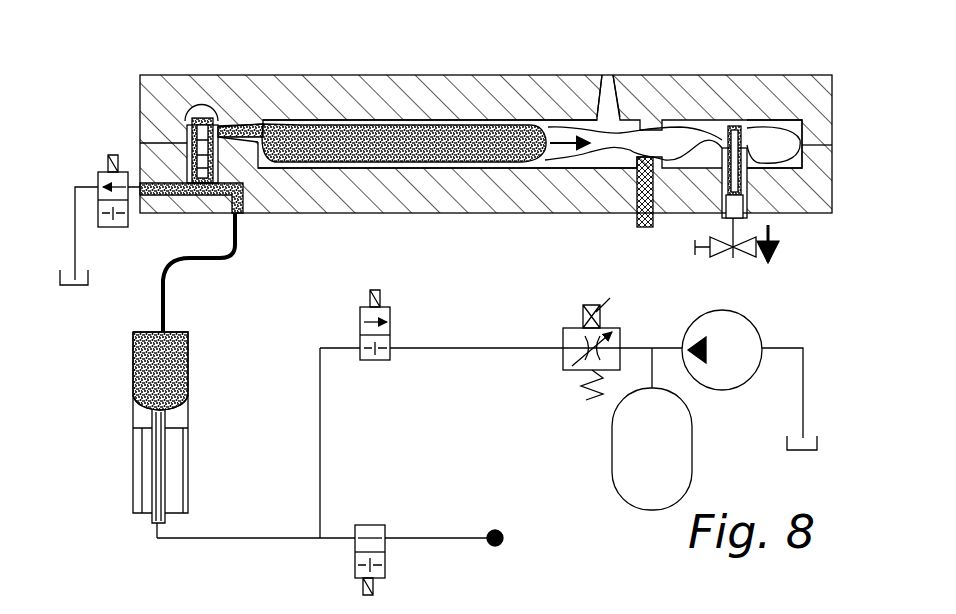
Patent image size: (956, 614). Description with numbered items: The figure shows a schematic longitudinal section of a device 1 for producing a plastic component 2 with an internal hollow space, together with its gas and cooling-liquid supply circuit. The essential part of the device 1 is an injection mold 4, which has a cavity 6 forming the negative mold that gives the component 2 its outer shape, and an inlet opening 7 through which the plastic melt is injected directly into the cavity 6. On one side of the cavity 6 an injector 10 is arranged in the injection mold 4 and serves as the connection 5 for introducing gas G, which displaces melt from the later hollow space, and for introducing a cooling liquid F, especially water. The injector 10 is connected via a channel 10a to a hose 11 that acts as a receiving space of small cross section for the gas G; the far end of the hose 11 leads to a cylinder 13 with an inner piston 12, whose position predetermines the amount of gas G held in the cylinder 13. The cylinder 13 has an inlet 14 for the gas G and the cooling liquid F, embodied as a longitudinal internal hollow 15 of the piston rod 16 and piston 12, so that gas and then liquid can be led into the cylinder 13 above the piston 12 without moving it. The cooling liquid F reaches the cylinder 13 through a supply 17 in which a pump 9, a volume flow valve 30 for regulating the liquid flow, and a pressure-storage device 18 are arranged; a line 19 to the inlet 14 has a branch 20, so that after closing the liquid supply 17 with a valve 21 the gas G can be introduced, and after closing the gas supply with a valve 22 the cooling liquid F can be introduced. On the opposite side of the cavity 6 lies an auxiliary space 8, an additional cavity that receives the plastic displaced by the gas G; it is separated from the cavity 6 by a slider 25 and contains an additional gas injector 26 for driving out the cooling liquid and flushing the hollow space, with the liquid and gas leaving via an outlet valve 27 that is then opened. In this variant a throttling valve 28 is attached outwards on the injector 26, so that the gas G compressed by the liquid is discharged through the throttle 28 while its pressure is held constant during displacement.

The device 1 is at (88, 364).
The plastic component 2 is at (590, 155).
The injection mold 4 is at (395, 197).
The connection 5 is at (234, 112).
The cavity 6 is at (338, 120).
The inlet opening 7 is at (610, 100).
The auxiliary space 8 is at (790, 170).
The pump 9 is at (752, 333).
The injector 10 is at (190, 118).
The channel 10a is at (212, 215).
The hose 11 is at (190, 262).
The piston 12 is at (178, 415).
The cylinder 13 is at (189, 346).
The inlet 14 is at (154, 529).
The longitudinal internal hollow 15 is at (158, 457).
The piston rod 16 is at (165, 498).
The supply 17 is at (466, 350).
The pressure-storage device 18 is at (612, 463).
The line 19 is at (243, 540).
The branch 20 is at (320, 536).
The valve 21 is at (392, 330).
The valve 22 is at (386, 556).
The slider 25 is at (647, 213).
The additional gas injector 26 is at (750, 130).
The outlet valve 27 is at (108, 228).
The throttling valve 28 is at (700, 258).
The volume flow valve 30 is at (564, 372).
The cooling liquid F is at (357, 160).
The gas G is at (596, 143).